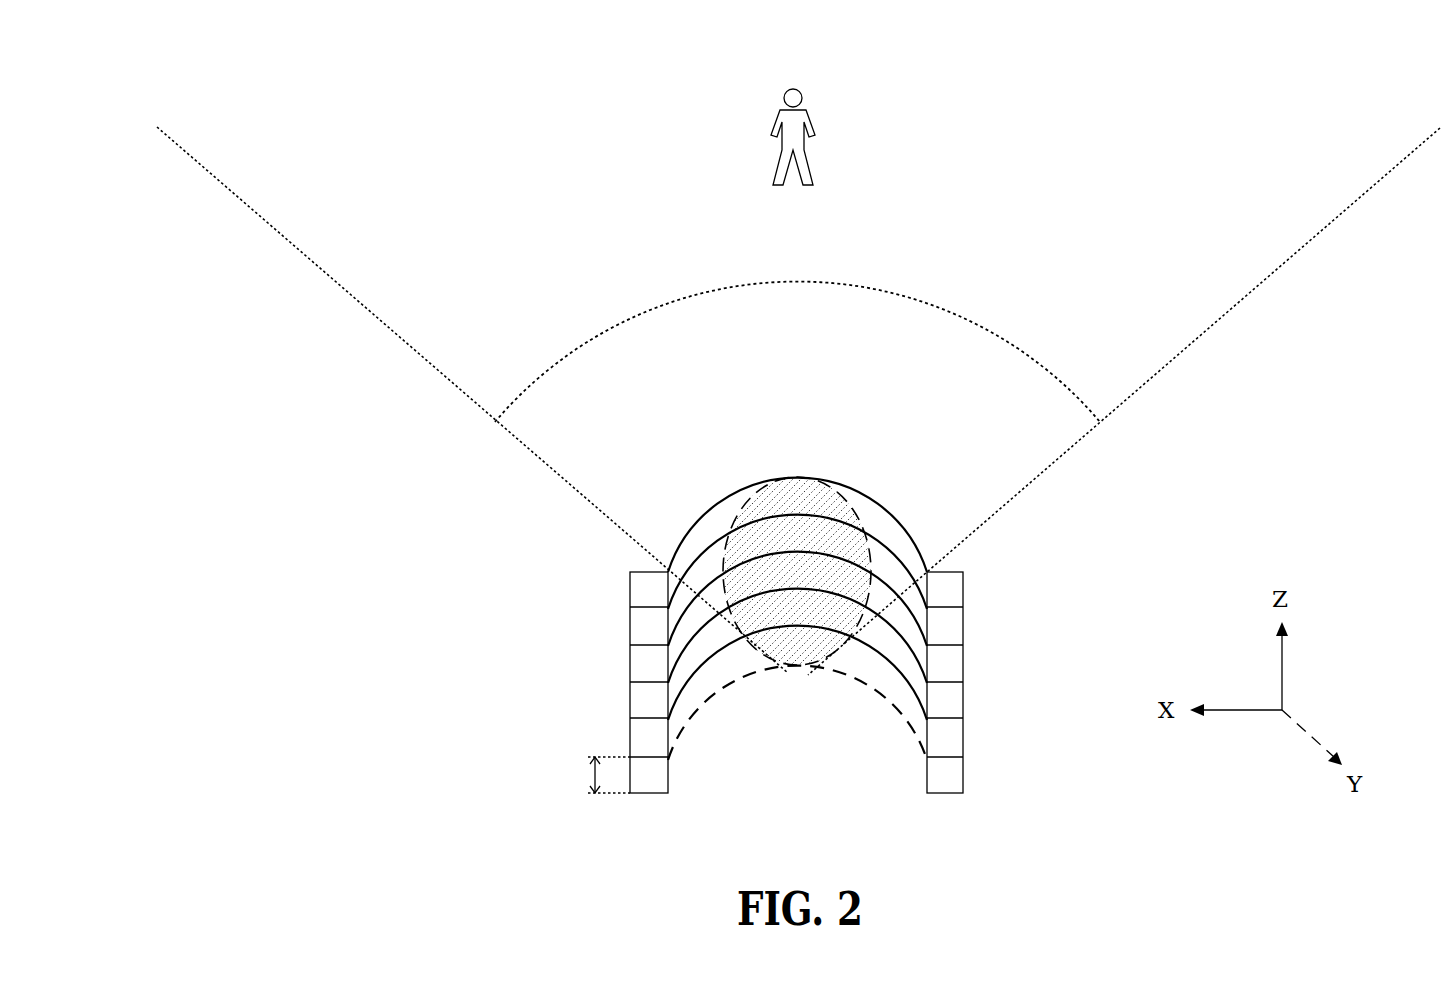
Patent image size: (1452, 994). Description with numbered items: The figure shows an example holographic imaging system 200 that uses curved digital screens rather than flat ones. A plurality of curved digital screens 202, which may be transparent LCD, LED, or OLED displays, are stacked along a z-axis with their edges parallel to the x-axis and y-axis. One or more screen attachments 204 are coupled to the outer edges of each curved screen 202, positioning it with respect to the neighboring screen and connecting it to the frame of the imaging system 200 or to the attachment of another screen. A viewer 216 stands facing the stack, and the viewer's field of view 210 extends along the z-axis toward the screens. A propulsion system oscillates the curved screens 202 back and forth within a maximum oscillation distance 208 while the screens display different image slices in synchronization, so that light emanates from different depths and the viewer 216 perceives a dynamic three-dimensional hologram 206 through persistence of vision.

The holographic imaging system 200 is at (752, 348).
The curved digital screen 202 is at (534, 577).
The screen attachment 204 is at (517, 637).
The hologram 206 is at (641, 523).
The maximum oscillation distance 208 is at (542, 729).
The field of view 210 is at (797, 330).
The viewer 216 is at (809, 157).